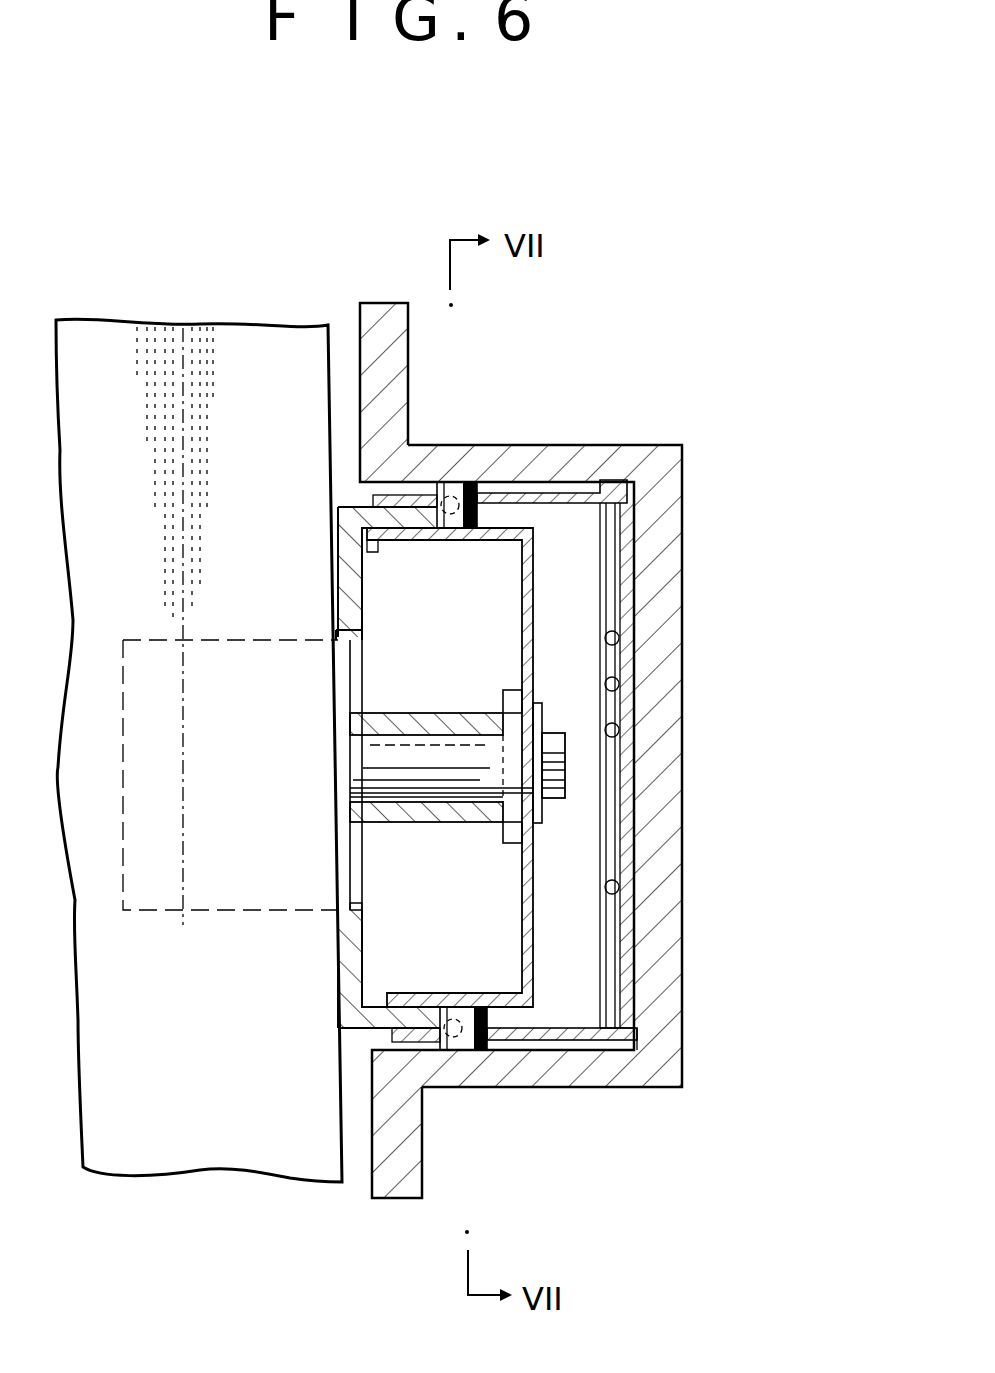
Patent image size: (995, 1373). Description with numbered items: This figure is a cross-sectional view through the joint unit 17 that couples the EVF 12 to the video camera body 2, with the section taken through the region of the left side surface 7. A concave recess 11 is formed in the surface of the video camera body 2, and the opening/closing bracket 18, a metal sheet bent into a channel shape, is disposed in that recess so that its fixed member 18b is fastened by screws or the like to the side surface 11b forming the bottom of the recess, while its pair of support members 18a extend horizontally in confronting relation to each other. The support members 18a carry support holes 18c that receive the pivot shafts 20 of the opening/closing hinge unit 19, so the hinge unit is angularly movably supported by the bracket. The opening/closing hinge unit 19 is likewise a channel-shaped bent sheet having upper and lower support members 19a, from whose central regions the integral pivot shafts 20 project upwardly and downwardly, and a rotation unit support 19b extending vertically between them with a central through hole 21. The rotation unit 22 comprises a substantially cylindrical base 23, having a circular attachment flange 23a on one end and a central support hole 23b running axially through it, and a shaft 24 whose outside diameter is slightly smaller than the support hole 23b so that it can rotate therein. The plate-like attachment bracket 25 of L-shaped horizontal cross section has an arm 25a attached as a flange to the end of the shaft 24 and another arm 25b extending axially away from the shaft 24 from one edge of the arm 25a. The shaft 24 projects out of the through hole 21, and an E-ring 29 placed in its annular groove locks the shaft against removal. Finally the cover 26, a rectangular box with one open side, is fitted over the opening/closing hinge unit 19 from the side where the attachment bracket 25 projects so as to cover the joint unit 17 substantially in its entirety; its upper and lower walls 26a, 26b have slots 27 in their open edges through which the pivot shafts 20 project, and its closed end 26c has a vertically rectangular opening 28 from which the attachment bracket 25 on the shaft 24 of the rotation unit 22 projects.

The video camera body 2 is at (390, 1200).
The left side surface 7 is at (354, 365).
The concave recess 11 is at (640, 735).
The side surface 11b is at (630, 690).
The EVF 12 is at (186, 1160).
The joint unit 17 is at (603, 478).
The opening/closing bracket 18 is at (548, 493).
The support members 18a is at (395, 497).
The fixed member 18b is at (640, 950).
The support holes 18c is at (466, 482).
The opening/closing hinge unit 19 is at (532, 570).
The support members 19a is at (372, 548).
The rotation unit support 19b is at (537, 913).
The pivot shafts 20 is at (446, 481).
The through hole 21 is at (567, 782).
The rotation unit 22 is at (380, 712).
The base 23 is at (442, 823).
The attachment flange 23a is at (505, 690).
The support hole 23b is at (448, 744).
The shaft 24 is at (568, 738).
The attachment bracket 25 is at (343, 630).
The arm 25a is at (345, 868).
The arm 25b is at (180, 913).
The cover 26 is at (342, 515).
The upper wall 26a is at (585, 517).
The lower wall 26b is at (612, 1044).
The closed end 26c is at (340, 1003).
The slots 27 is at (450, 528).
The opening 28 is at (345, 904).
The E-ring 29 is at (567, 760).